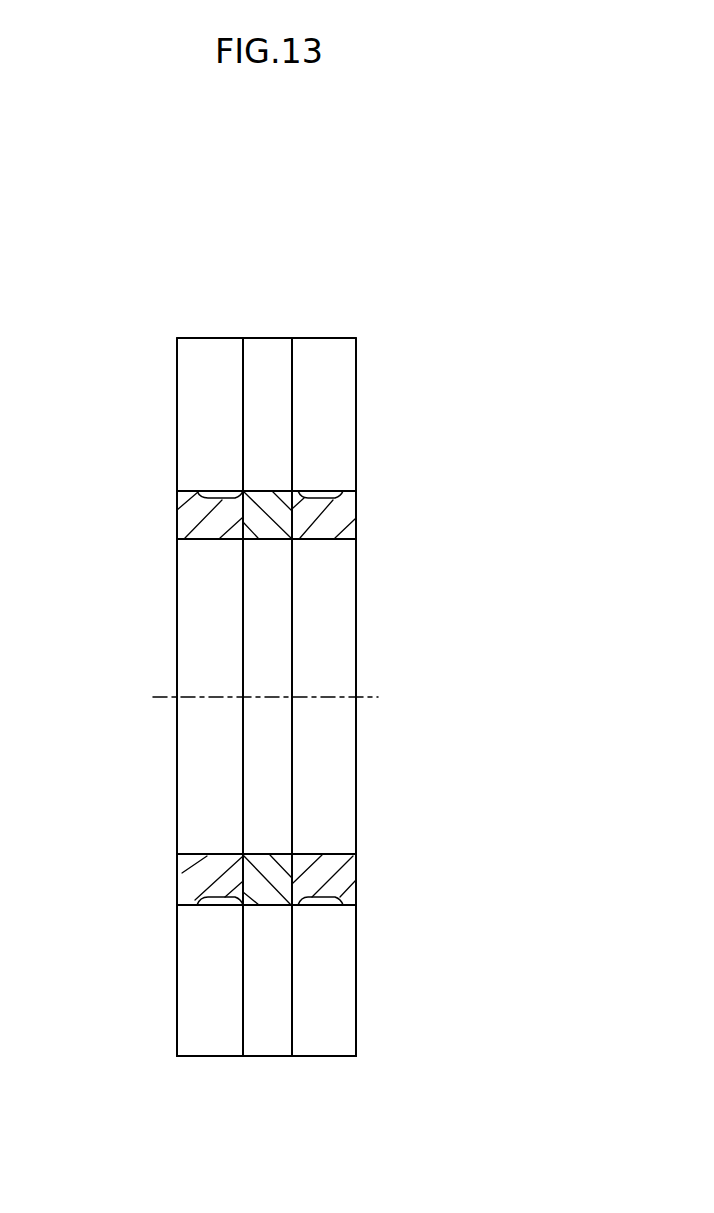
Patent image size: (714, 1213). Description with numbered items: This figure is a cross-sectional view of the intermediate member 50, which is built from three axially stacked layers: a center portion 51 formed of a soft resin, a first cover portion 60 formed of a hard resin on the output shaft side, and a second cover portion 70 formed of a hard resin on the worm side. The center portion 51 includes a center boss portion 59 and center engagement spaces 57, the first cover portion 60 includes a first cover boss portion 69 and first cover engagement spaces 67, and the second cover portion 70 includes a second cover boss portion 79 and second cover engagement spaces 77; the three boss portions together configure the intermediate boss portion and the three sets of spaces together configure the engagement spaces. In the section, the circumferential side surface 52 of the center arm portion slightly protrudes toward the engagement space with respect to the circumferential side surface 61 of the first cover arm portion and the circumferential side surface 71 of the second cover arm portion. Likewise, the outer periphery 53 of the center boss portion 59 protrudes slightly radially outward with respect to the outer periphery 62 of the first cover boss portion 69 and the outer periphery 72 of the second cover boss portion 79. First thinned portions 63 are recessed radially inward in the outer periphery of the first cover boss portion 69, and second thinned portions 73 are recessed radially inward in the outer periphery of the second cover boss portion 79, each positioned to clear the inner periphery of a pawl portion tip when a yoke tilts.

The intermediate member 50 is at (348, 335).
The center portion 51 is at (264, 333).
The circumferential side surface of the center arm portion 52 is at (267, 458).
The outer periphery of the center boss portion 53 is at (267, 491).
The center engagement space 57 is at (267, 385).
The center boss portion 59 is at (267, 512).
The first cover portion 60 is at (322, 333).
The circumferential side surface of the first cover arm portion 61 is at (325, 938).
The outer periphery of the first cover boss portion 62 is at (345, 903).
The first thinned portion 63 is at (313, 903).
The first cover engagement space 67 is at (320, 1012).
The first cover boss portion 69 is at (320, 885).
The second cover portion 70 is at (209, 333).
The circumferential side surface of the second cover arm portion 71 is at (203, 938).
The outer periphery of the second cover boss portion 72 is at (188, 903).
The second thinned portion 73 is at (230, 903).
The second cover engagement space 77 is at (205, 1012).
The second cover boss portion 79 is at (210, 884).